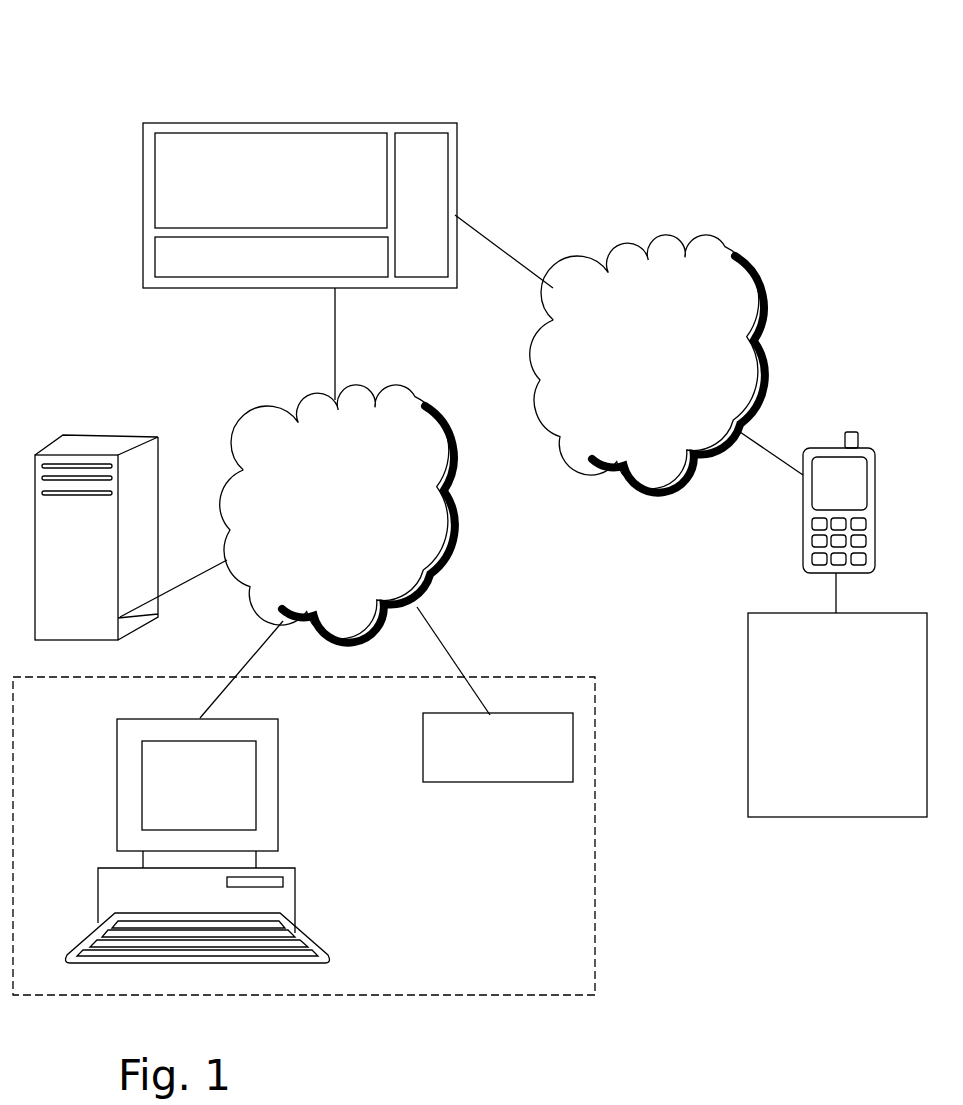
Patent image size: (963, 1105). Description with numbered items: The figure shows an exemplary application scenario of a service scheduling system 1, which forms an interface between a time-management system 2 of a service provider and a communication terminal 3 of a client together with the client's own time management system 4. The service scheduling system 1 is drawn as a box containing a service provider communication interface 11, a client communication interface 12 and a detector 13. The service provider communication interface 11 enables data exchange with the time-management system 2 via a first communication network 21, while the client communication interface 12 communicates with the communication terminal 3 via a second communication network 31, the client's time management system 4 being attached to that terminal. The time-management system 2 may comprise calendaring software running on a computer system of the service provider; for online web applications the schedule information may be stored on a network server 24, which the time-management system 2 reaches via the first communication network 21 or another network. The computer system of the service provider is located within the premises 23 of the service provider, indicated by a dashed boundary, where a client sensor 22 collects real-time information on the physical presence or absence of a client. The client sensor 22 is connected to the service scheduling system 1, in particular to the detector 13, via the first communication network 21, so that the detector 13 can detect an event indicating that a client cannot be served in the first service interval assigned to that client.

The service scheduling system 1 is at (282, 120).
The service provider communication interface 11 is at (202, 253).
The client communication interface 12 is at (422, 150).
The detector 13 is at (213, 163).
The first communication network 21 is at (383, 450).
The client sensor 22 is at (505, 765).
The premises of the service provider 23 is at (552, 675).
The network server 24 is at (99, 447).
The second communication network 31 is at (697, 283).
The time-management system 2 is at (137, 770).
The communication terminal 3 is at (803, 512).
The time management system 4 is at (748, 758).